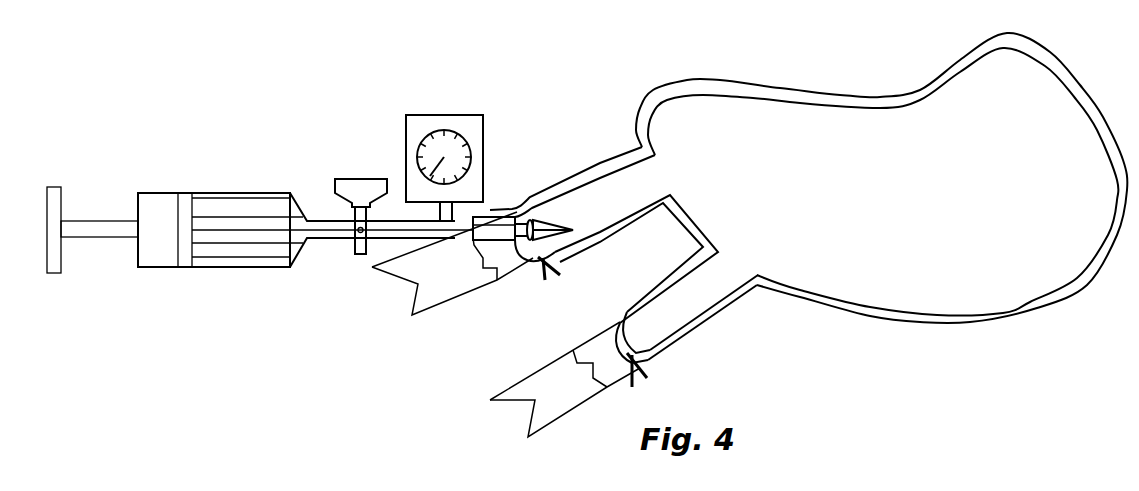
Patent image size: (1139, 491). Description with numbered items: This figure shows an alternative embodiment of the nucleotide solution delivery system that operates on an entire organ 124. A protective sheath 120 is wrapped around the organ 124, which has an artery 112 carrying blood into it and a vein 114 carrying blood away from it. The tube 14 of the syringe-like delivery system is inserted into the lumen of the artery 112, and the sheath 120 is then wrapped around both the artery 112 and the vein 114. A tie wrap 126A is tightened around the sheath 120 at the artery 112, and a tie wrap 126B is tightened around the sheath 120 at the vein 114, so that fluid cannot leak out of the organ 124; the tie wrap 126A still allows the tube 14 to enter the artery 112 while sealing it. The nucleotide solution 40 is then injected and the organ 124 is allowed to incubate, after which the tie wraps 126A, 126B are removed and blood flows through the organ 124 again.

The nucleotide solution 40 is at (225, 205).
The tube 14 is at (492, 225).
The artery 112 is at (427, 295).
The vein 114 is at (503, 400).
The tie wrap 126A is at (553, 270).
The tie wrap 126B is at (650, 372).
The protective sheath 120 is at (1013, 312).
The organ 124 is at (1072, 263).